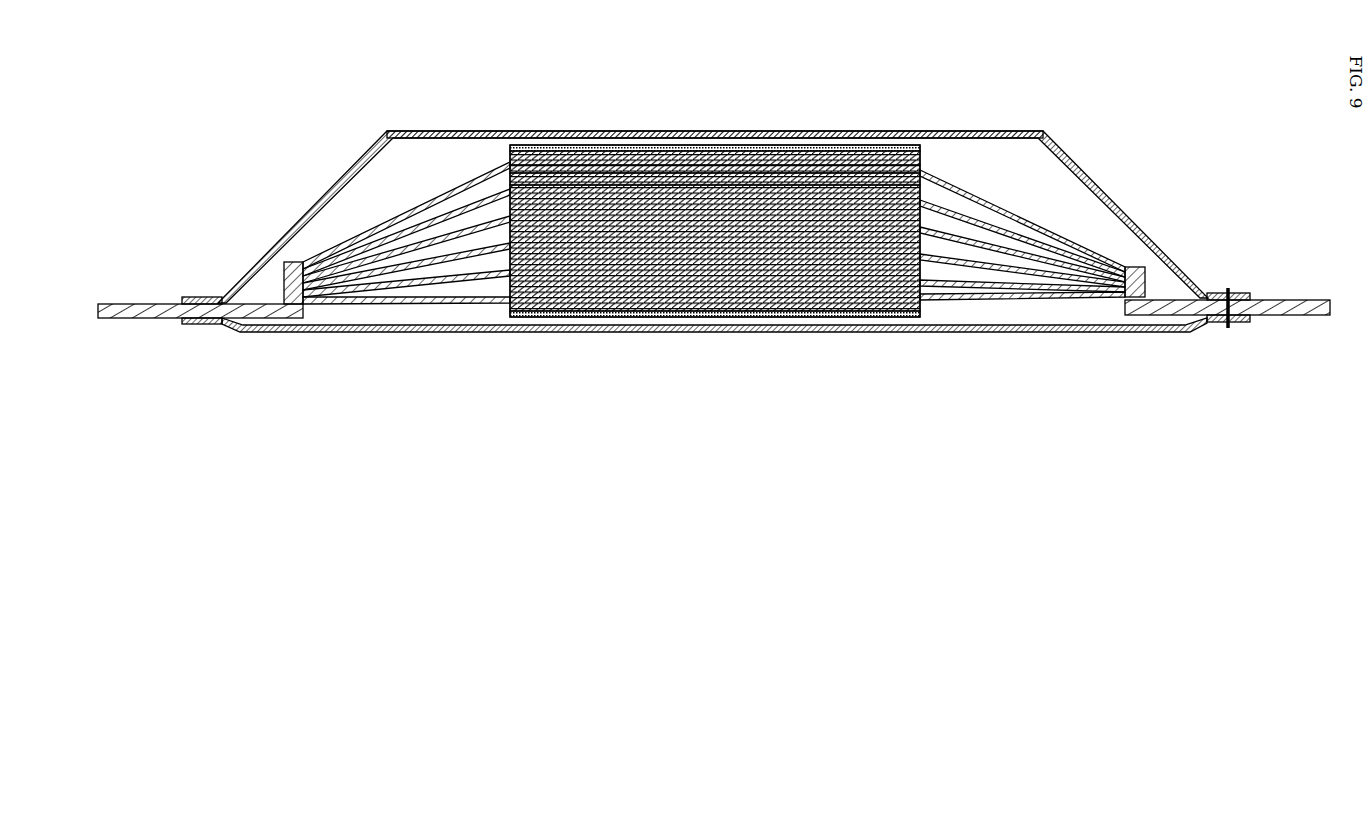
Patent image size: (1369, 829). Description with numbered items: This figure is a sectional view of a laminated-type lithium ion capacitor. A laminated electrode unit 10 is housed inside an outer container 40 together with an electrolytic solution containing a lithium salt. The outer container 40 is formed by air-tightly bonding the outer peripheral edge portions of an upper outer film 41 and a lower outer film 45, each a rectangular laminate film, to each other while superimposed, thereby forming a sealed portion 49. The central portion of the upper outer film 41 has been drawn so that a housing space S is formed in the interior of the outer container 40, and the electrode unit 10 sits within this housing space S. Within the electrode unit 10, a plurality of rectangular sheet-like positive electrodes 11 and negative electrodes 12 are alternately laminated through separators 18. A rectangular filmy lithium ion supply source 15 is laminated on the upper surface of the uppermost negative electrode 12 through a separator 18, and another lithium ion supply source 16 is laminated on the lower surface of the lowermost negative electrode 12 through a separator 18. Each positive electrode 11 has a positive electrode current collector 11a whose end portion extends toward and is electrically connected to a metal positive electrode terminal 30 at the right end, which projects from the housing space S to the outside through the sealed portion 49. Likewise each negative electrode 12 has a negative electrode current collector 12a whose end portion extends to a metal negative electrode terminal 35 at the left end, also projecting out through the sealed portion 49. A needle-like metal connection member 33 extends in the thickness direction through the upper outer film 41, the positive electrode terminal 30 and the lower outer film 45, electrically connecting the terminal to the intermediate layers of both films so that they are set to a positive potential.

The electrode unit 10 is at (774, 232).
The positive electrode 11 is at (882, 178).
The positive electrode current collector 11a is at (1048, 304).
The negative electrode 12 is at (626, 162).
The negative electrode current collector 12a is at (470, 308).
The lithium ion supply source 15 is at (768, 148).
The lithium ion supply source 16 is at (766, 313).
The separator 18 is at (828, 160).
The positive electrode terminal 30 is at (1303, 298).
The connection member 33 is at (1228, 283).
The negative electrode terminal 35 is at (138, 322).
The outer container 40 is at (713, 175).
The upper outer film 41 is at (698, 132).
The lower outer film 45 is at (688, 334).
The sealed portion 49 is at (205, 327).
The housing space S is at (355, 205).